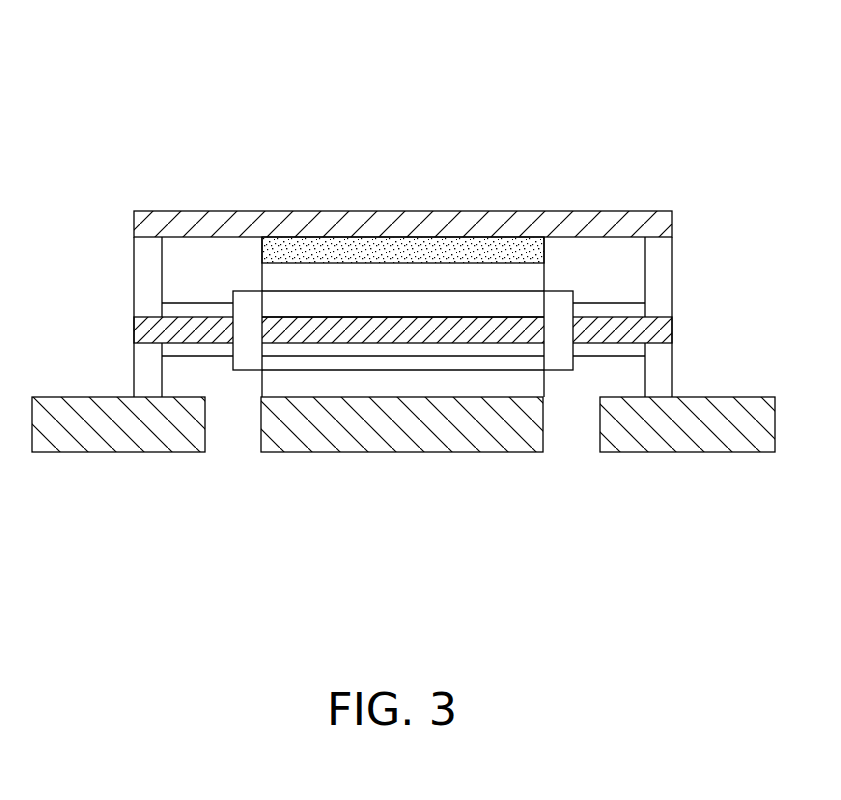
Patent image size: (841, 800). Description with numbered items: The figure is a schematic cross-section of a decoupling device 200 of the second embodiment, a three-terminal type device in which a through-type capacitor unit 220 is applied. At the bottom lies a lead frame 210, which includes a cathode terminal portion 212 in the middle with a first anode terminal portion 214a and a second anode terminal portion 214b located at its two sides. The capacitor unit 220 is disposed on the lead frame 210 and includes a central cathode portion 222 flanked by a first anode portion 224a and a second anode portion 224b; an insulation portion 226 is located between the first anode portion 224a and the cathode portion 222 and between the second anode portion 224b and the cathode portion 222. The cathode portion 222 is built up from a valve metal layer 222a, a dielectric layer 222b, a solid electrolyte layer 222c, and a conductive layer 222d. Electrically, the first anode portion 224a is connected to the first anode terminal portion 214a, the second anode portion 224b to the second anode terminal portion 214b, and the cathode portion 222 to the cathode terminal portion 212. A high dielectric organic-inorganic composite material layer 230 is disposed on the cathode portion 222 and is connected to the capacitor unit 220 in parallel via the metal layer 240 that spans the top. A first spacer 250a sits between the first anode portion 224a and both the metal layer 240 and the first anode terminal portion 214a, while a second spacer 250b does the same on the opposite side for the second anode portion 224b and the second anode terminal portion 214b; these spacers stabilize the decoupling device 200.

The decoupling device 200 is at (715, 587).
The lead frame 210 is at (647, 513).
The cathode terminal portion 212 is at (418, 437).
The first anode terminal portion 214a is at (159, 440).
The second anode terminal portion 214b is at (642, 440).
The capacitor unit 220 is at (647, 70).
The cathode portion 222 is at (553, 120).
The valve metal layer 222a is at (308, 325).
The dielectric layer 222b is at (365, 313).
The solid electrolyte layer 222c is at (437, 297).
The conductive layer 222d is at (497, 270).
The first anode portion 224a is at (198, 301).
The second anode portion 224b is at (606, 301).
The insulation portion 226 is at (246, 288).
The high dielectric organic-inorganic composite material layer 230 is at (468, 250).
The metal layer 240 is at (653, 220).
The first spacer 250a is at (147, 273).
The second spacer 250b is at (658, 275).